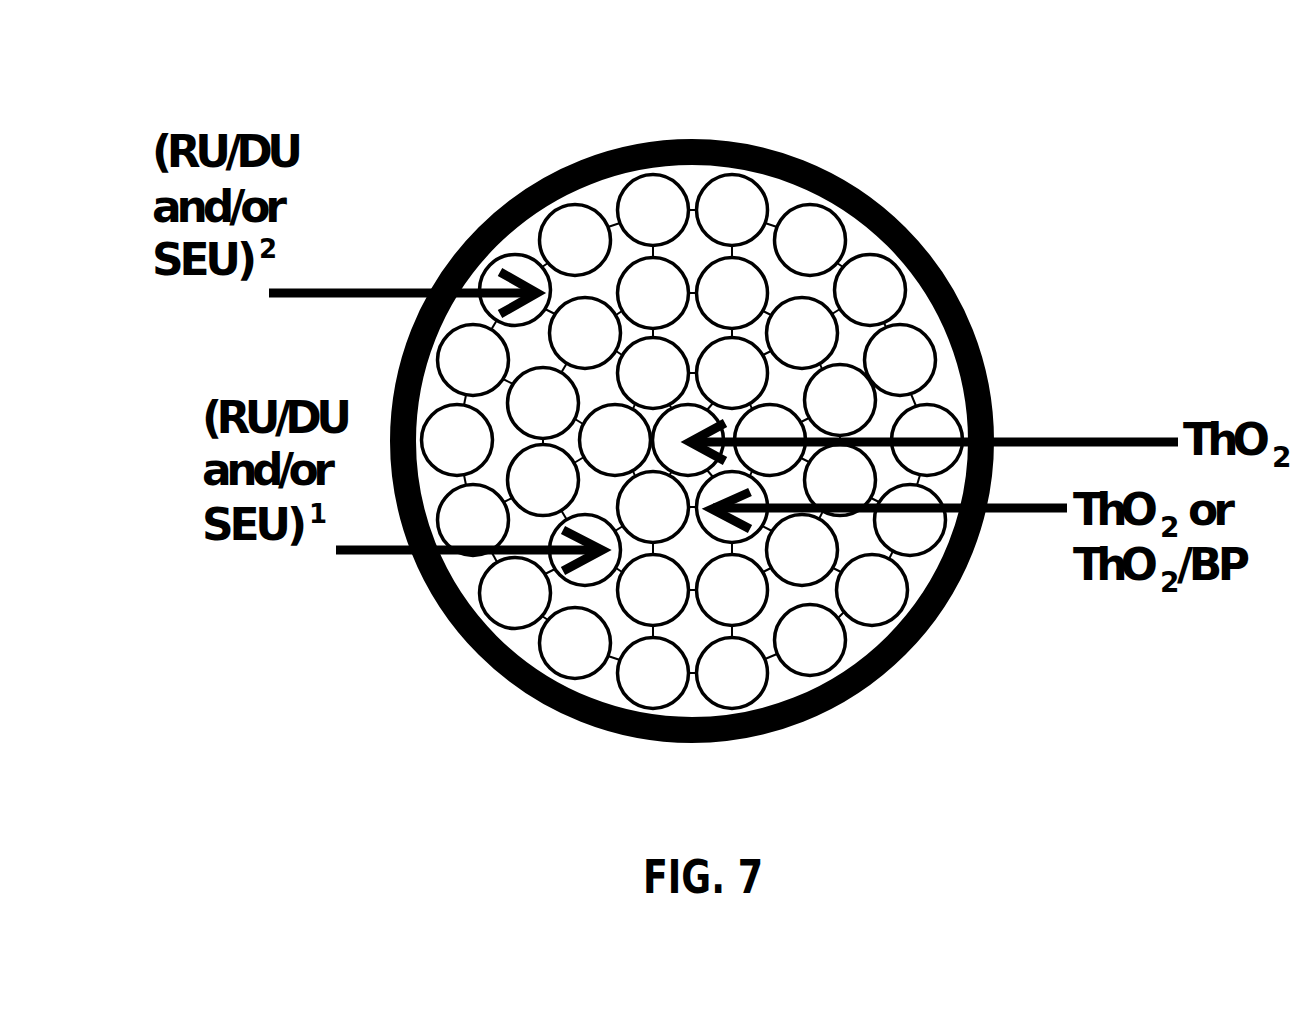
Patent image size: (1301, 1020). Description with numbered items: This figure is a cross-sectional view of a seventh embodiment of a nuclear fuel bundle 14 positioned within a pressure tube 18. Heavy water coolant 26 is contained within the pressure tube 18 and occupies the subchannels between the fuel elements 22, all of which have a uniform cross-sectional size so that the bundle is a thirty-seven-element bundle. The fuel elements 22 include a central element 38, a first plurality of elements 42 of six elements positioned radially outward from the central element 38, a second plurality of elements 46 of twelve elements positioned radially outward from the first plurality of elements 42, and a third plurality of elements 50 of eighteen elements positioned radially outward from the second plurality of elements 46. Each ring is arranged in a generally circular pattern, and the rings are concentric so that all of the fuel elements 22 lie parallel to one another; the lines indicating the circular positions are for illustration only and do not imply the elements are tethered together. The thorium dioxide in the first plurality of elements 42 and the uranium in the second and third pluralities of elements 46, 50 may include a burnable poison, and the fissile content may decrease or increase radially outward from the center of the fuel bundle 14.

The fuel bundle 14 is at (693, 182).
The pressure tube 18 is at (808, 175).
The fuel elements 22 is at (737, 547).
The heavy water coolant 26 is at (862, 242).
The central element 38 is at (692, 407).
The first plurality of elements 42 is at (693, 523).
The second plurality of elements 46 is at (593, 273).
The third plurality of elements 50 is at (543, 620).